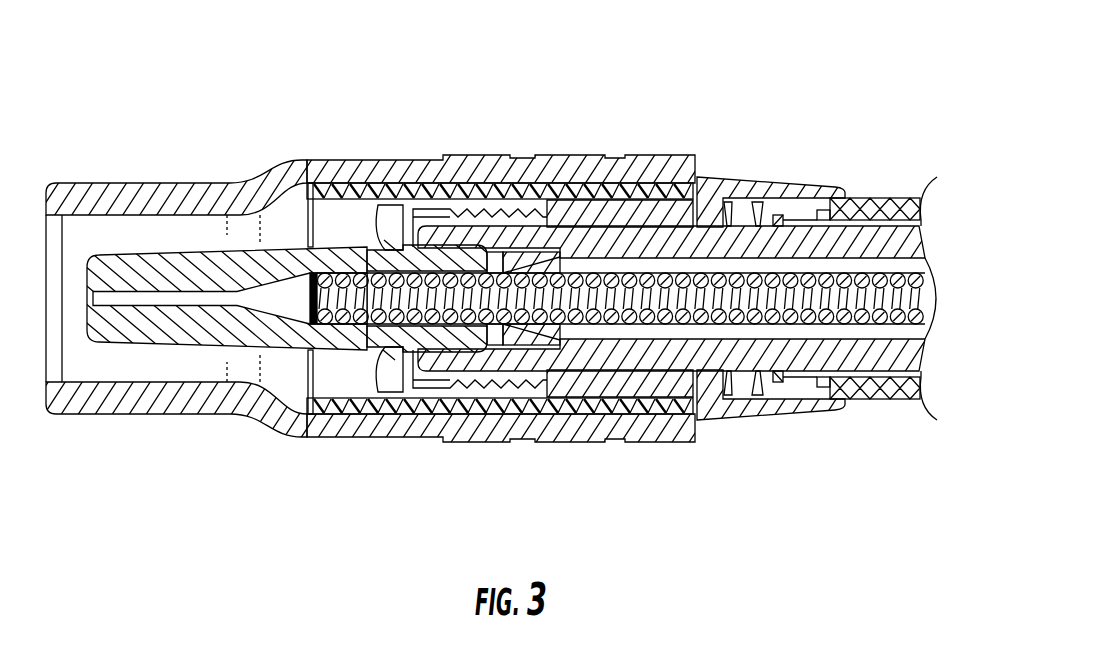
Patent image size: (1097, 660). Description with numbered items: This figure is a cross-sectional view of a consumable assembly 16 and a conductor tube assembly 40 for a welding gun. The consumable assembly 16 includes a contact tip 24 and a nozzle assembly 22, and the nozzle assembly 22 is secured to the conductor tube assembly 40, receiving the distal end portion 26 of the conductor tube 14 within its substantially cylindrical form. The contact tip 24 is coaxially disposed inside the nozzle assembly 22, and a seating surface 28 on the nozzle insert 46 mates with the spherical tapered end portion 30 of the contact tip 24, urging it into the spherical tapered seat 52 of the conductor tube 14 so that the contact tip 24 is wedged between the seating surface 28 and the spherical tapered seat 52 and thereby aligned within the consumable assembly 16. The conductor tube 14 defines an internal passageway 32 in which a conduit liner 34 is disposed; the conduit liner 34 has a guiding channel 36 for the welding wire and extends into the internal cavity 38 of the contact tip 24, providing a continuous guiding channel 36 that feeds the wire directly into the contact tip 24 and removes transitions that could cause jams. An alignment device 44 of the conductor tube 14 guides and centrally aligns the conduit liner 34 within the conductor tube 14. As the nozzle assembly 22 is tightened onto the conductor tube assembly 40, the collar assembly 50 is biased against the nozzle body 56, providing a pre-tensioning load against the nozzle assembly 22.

The conductor tube 14 is at (881, 235).
The consumable assembly 16 is at (258, 105).
The nozzle assembly 22 is at (258, 160).
The contact tip 24 is at (174, 275).
The distal end portion 26 is at (563, 232).
The seating surface 28 is at (402, 243).
The end portion of the contact tip 30 is at (427, 357).
The internal passageway 32 is at (900, 334).
The conduit liner 34 is at (820, 277).
The guiding channel 36 is at (820, 277).
The internal cavity 38 is at (298, 300).
The conductor tube assembly 40 is at (848, 432).
The alignment device 44 is at (533, 245).
The nozzle insert 46 is at (640, 400).
The collar assembly 50 is at (768, 163).
The spherical tapered seat 52 is at (455, 352).
The nozzle body 56 is at (580, 405).